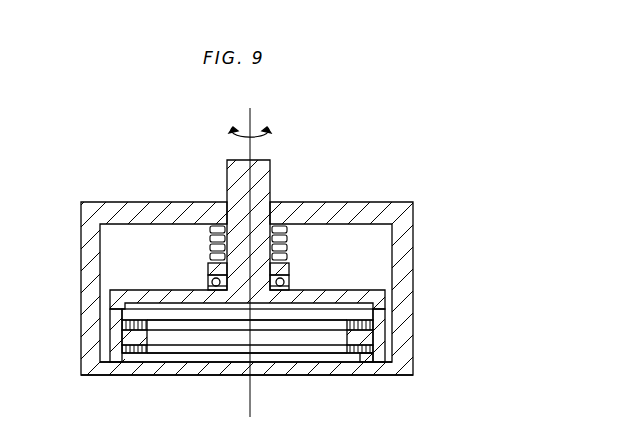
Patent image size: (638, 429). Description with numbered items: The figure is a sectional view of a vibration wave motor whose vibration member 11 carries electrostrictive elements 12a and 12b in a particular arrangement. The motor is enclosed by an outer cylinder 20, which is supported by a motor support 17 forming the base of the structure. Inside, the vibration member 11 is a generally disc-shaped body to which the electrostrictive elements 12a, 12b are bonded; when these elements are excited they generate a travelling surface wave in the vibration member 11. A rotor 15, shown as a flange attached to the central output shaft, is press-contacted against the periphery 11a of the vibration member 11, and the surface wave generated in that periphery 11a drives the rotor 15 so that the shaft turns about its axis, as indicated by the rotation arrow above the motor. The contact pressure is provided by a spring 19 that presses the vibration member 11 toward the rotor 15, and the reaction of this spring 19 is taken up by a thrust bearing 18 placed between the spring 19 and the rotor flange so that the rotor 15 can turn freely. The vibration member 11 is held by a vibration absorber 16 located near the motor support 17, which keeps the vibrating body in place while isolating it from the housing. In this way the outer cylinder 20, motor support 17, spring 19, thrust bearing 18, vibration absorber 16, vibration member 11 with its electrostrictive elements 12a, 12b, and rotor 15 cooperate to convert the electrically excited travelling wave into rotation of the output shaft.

The outer cylinder 20 is at (413, 212).
The spring 19 is at (287, 240).
The thrust bearing 18 is at (289, 268).
The rotor 15 is at (385, 296).
The periphery of the vibration member 11a is at (385, 310).
The electrostrictive element 12a is at (378, 325).
The vibration member 11 is at (378, 347).
The electrostrictive element 12b is at (383, 367).
The motor support 17 is at (315, 370).
The vibration absorber 16 is at (371, 362).